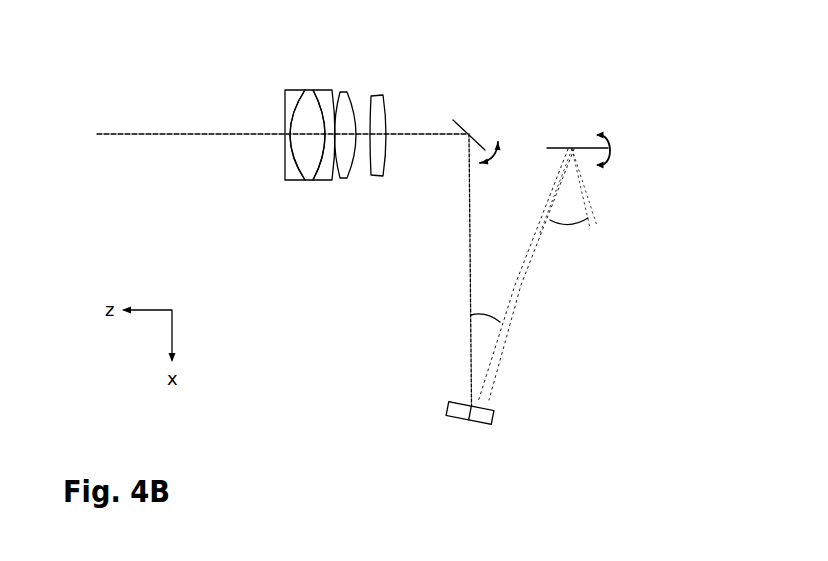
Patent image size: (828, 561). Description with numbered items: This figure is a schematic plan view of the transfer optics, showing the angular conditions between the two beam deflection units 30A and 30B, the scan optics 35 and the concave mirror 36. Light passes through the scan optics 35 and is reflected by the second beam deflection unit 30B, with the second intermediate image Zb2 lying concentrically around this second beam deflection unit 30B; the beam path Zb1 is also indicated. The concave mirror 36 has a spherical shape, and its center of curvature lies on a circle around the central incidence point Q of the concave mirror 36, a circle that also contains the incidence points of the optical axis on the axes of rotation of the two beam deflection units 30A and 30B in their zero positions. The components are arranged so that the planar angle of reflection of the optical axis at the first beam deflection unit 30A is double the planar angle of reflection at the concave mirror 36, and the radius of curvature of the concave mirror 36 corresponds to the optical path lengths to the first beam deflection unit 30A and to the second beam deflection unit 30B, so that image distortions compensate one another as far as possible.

The first measuring beam Zb1 is at (97, 142).
The second intermediate image Zb2 is at (466, 277).
The scan optics 35 is at (386, 186).
The second beam deflection unit 30B is at (457, 121).
The first beam deflection unit 30A is at (584, 148).
The concave mirror 36 is at (448, 408).
The central incidence point Q is at (474, 403).